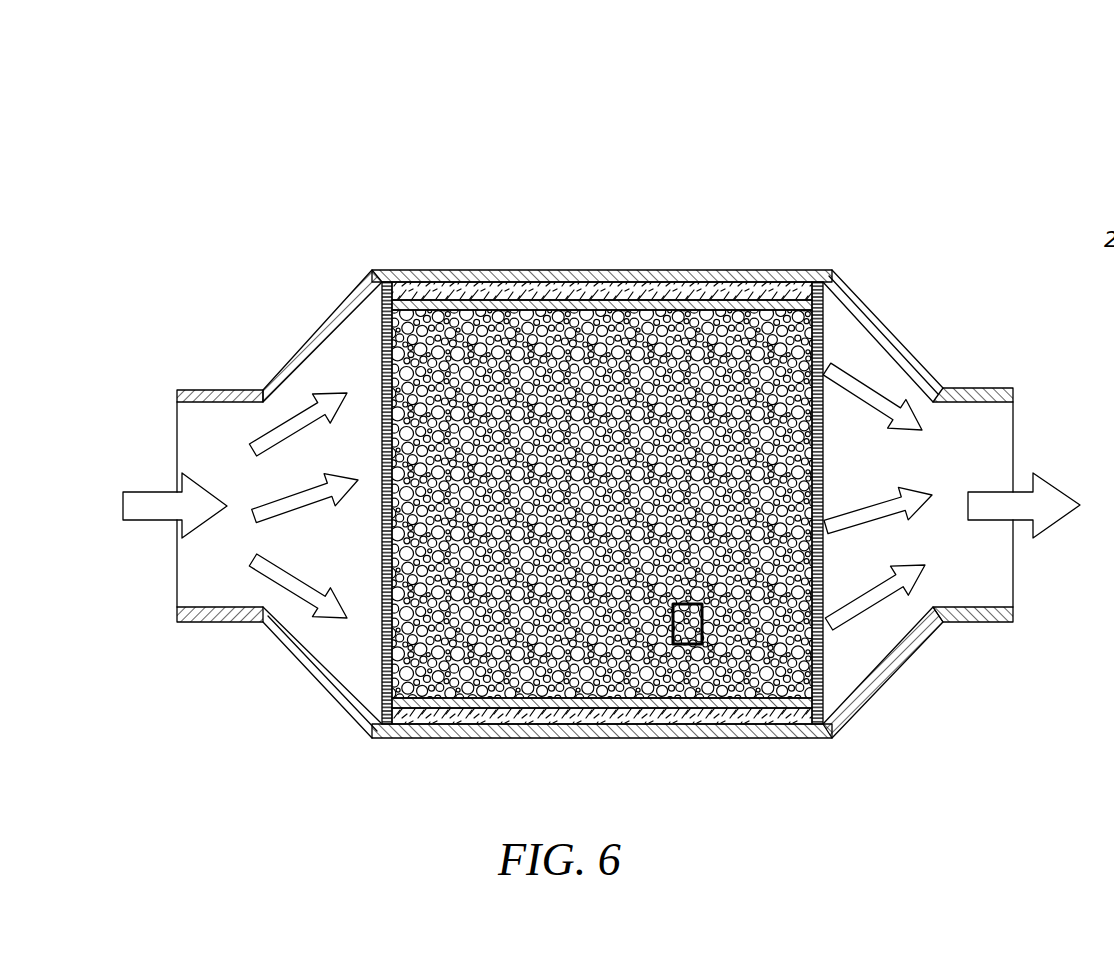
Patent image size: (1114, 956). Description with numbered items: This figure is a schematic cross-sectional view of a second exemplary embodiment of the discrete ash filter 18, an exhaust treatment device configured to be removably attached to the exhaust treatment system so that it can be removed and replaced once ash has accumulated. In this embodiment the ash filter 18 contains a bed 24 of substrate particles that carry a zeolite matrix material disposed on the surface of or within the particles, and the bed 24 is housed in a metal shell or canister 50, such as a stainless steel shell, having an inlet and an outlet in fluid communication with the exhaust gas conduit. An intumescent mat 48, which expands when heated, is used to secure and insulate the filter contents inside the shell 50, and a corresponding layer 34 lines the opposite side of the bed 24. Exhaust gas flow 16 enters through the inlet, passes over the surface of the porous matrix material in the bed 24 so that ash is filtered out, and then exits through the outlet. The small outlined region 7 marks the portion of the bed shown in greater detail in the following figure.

The discrete ash filter 18 is at (787, 184).
The metal shell or canister 50 is at (772, 268).
The exhaust gas flow 16 is at (160, 500).
The intumescent mat 48 is at (420, 293).
The bed of substrate particles 24 is at (553, 330).
The outlet face 34 is at (490, 700).
The detail region of FIG. 7 is at (687, 645).